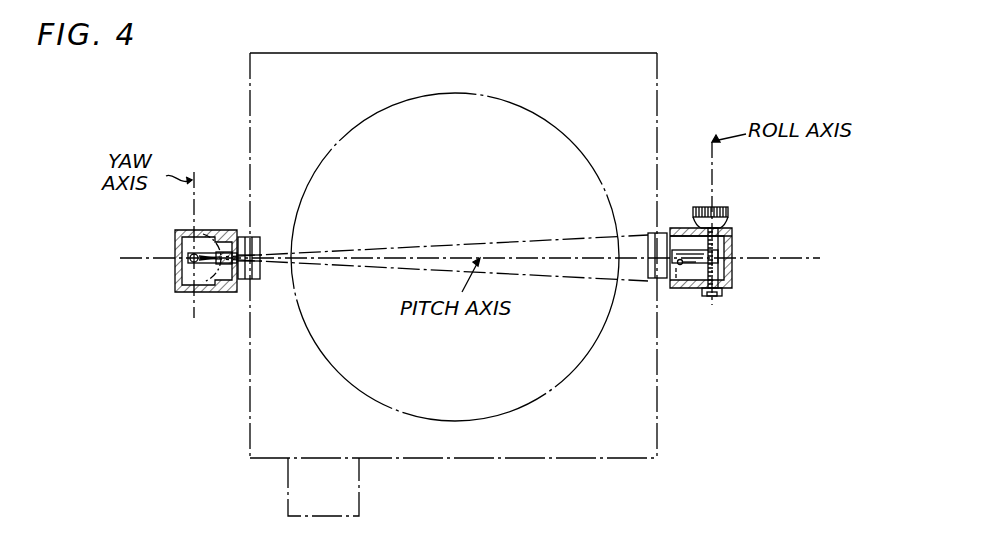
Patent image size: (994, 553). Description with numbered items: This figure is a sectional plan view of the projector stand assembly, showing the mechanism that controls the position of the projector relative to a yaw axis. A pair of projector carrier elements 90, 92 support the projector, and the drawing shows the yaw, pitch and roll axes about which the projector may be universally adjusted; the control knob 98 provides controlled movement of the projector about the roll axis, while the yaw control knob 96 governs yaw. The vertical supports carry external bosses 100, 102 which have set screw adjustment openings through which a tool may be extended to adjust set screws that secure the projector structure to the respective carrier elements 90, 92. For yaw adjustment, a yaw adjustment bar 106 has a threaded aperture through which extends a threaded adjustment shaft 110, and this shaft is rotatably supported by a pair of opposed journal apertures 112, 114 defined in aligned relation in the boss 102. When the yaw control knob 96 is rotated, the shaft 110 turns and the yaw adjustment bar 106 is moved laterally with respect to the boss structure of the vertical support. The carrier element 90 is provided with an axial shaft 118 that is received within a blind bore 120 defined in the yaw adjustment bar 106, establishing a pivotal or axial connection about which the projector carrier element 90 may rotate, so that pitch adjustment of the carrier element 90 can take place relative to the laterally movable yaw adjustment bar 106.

The projector carrier element 90 is at (652, 233).
The projector carrier element 92 is at (256, 281).
The yaw control knob 96 is at (723, 208).
The control knob 98 is at (209, 284).
The external boss 100 is at (176, 291).
The external boss 102 is at (729, 289).
The yaw adjustment bar 106 is at (697, 251).
The threaded adjustment shaft 110 is at (727, 272).
The journal aperture 112 is at (731, 232).
The journal aperture 114 is at (728, 284).
The axial shaft 118 is at (668, 264).
The blind bore 120 is at (677, 282).